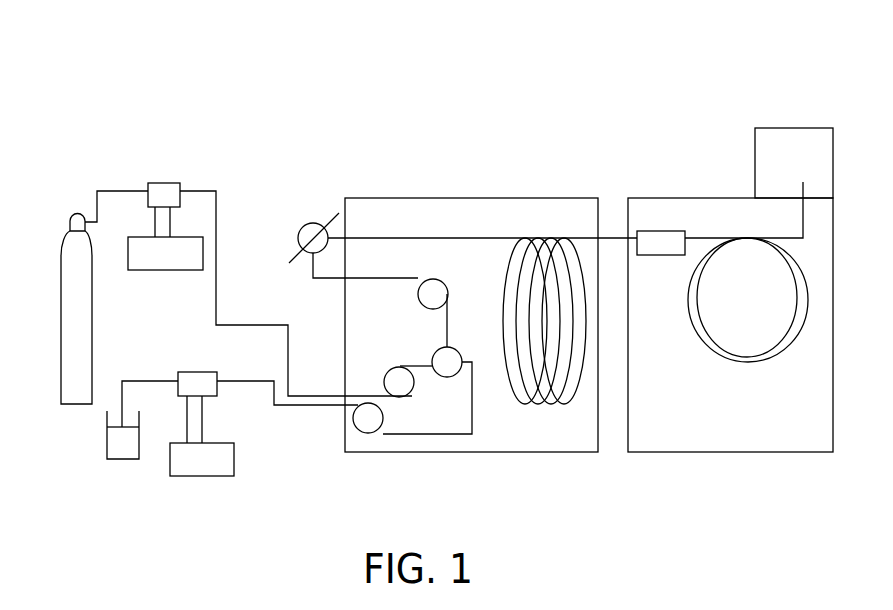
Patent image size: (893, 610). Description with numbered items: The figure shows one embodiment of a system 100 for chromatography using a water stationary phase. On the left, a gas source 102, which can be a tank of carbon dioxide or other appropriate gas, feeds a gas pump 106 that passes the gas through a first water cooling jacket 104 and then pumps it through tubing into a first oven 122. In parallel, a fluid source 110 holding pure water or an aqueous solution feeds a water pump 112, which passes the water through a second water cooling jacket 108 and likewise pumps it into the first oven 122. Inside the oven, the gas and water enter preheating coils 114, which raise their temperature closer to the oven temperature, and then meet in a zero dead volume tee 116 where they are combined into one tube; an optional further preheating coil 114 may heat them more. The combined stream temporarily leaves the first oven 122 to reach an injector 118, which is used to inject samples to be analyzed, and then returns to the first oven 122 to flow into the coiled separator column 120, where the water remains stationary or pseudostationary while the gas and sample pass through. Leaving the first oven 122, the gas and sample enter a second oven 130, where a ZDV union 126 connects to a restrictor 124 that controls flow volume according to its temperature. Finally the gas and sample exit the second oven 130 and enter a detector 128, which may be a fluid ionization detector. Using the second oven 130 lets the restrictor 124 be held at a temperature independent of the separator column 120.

The system 100 is at (104, 47).
The gas source 102 is at (61, 259).
The first water cooling jacket 104 is at (166, 183).
The gas pump 106 is at (182, 264).
The second water cooling jacket 108 is at (195, 372).
The fluid source 110 is at (107, 446).
The water pump 112 is at (218, 470).
The preheating coils 114 is at (370, 402).
The zero dead volume tee 116 is at (447, 377).
The injector 118 is at (308, 223).
The separator column 120 is at (500, 305).
The first oven 122 is at (582, 446).
The restrictor 124 is at (694, 330).
The ZDV union 126 is at (660, 231).
The detector 128 is at (812, 163).
The second oven 130 is at (820, 446).